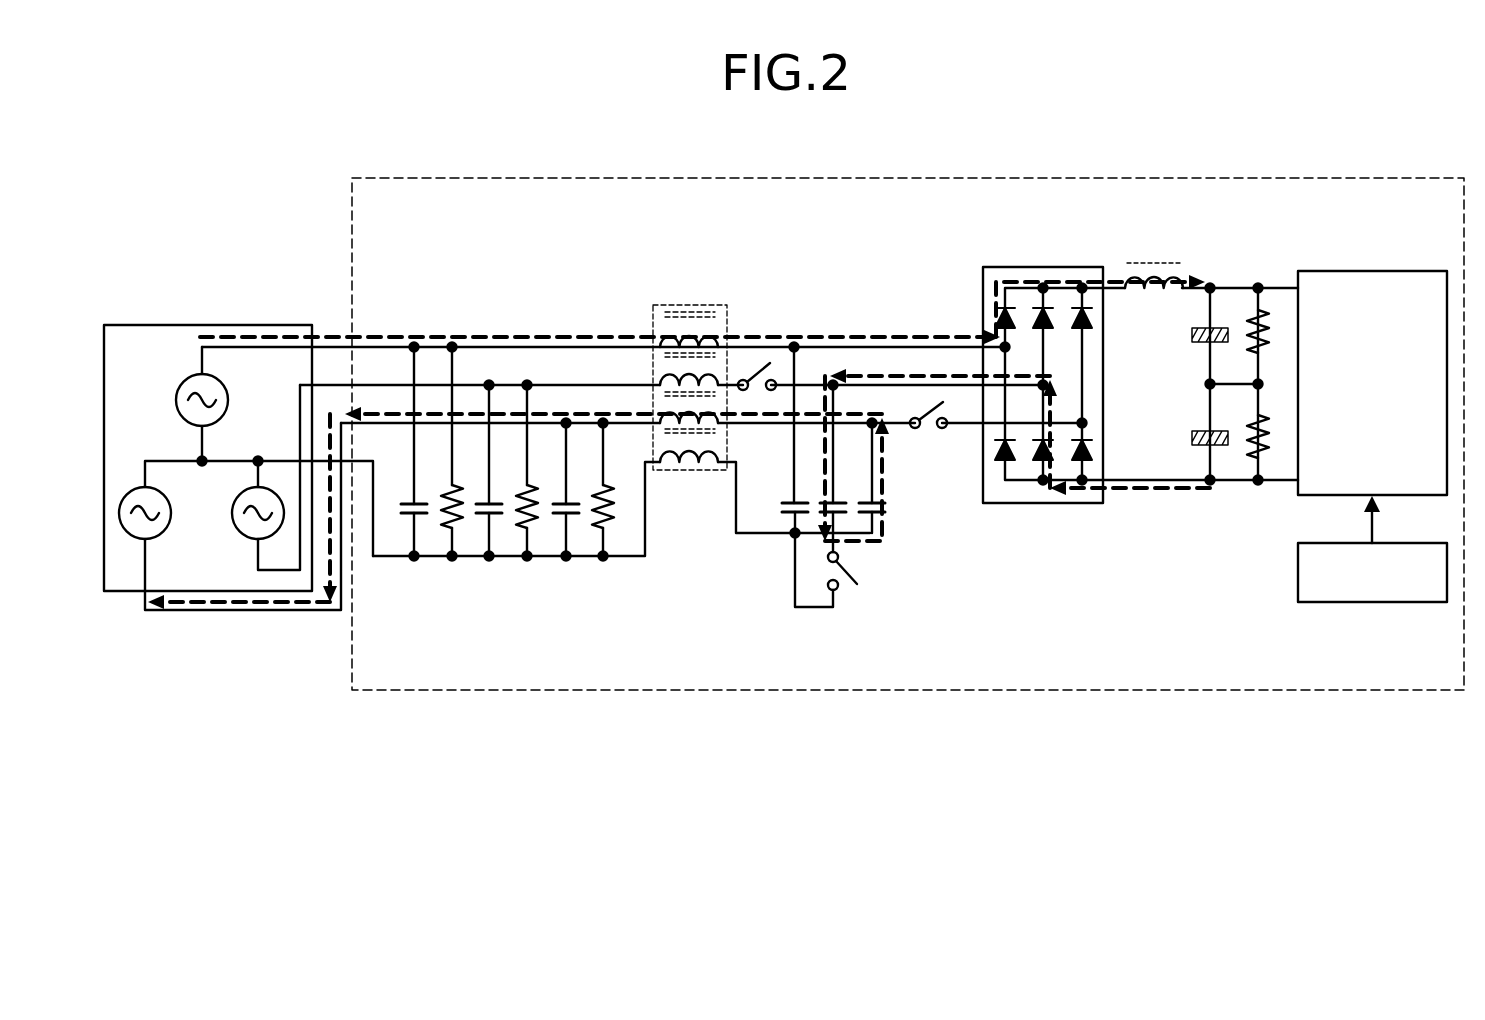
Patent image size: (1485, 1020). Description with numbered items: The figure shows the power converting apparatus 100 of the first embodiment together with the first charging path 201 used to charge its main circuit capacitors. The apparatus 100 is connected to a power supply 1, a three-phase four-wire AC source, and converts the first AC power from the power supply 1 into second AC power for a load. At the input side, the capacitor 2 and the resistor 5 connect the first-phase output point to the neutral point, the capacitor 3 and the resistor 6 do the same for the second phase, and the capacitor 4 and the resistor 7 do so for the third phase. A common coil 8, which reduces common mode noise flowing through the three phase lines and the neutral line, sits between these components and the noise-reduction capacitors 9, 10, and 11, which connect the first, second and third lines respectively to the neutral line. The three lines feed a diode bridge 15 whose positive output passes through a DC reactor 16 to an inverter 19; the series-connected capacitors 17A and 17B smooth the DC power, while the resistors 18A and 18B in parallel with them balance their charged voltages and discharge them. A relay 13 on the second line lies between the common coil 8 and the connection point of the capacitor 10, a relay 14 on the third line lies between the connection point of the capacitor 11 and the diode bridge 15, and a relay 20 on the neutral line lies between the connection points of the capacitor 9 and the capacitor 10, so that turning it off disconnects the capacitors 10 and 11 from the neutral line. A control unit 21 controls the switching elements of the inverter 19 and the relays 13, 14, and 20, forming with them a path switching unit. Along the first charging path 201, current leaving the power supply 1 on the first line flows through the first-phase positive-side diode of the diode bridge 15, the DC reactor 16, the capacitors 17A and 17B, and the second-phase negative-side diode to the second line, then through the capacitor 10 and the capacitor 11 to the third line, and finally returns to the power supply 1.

The power supply 1 is at (238, 440).
The capacitor 2 is at (419, 516).
The capacitor 3 is at (494, 516).
The capacitor 4 is at (571, 516).
The resistor 5 is at (461, 525).
The resistor 6 is at (537, 525).
The resistor 7 is at (613, 525).
The common coil 8 is at (690, 362).
The capacitor 9 is at (786, 516).
The capacitor 10 is at (839, 516).
The capacitor 11 is at (877, 511).
The relay 13 is at (755, 372).
The relay 14 is at (928, 445).
The diode bridge 15 is at (1140, 358).
The DC reactor 16 is at (1211, 250).
The capacitor 17A is at (1172, 335).
The capacitor 17B is at (1172, 438).
The resistor 18A is at (1268, 318).
The resistor 18B is at (1272, 458).
The inverter 19 is at (1372, 353).
The relay 20 is at (858, 574).
The control unit 21 is at (1372, 580).
The power converting apparatus 100 is at (908, 404).
The first charging path 201 is at (412, 337).